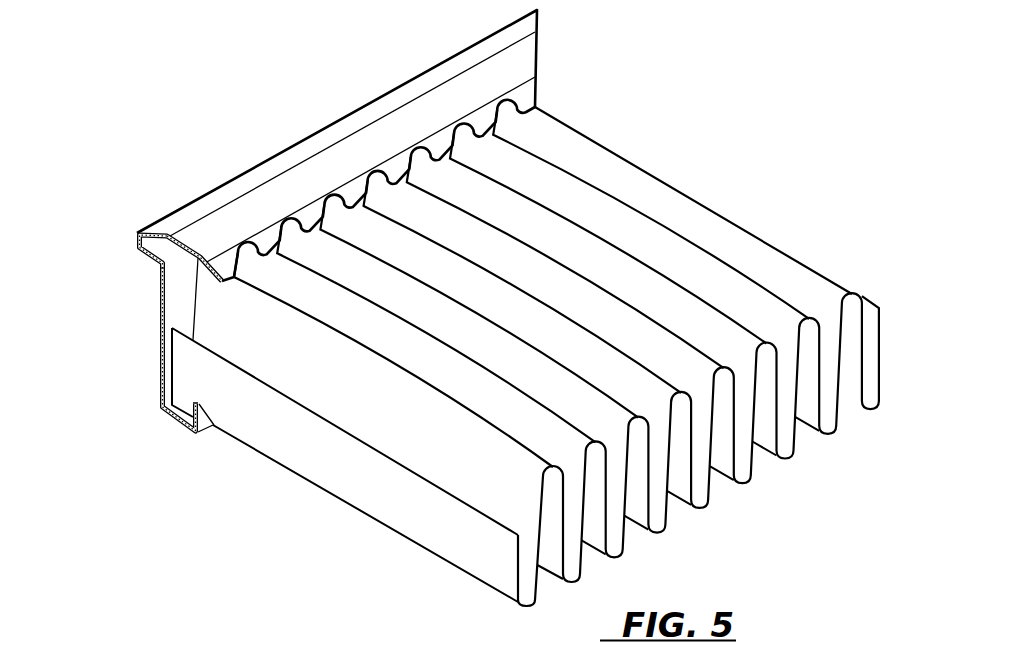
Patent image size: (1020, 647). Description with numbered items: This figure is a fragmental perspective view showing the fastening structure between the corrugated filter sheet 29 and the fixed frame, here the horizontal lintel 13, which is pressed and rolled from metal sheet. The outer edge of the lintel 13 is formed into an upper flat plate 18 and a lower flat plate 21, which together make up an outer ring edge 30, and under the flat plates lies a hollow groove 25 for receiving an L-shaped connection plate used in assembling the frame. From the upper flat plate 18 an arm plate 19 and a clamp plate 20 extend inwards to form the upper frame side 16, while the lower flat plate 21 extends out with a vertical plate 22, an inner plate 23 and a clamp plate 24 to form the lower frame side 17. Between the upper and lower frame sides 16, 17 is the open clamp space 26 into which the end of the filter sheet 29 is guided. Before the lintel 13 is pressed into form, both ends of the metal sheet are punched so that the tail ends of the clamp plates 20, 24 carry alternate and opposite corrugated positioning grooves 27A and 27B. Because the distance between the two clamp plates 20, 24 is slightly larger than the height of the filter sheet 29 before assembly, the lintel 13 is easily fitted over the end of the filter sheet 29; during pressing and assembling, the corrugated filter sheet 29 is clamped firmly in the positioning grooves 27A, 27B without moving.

The horizontal lintel 13 is at (266, 110).
The upper frame side 16 is at (402, 117).
The lower frame side 17 is at (138, 420).
The flat plate 18 is at (325, 143).
The arm plate 19 is at (222, 224).
The clamp plate 20 is at (225, 272).
The flat plate 21 is at (155, 262).
The vertical plate 22 is at (160, 360).
The inner plate 23 is at (180, 425).
The clamp plate 24 is at (203, 438).
The hollow groove 25 is at (158, 252).
The open clamp space 26 is at (212, 385).
The corrugated positioning groove 27A is at (250, 257).
The corrugated positioning groove 27B is at (222, 427).
The corrugated filter sheet 29 is at (658, 245).
The outer ring edge 30 is at (145, 223).